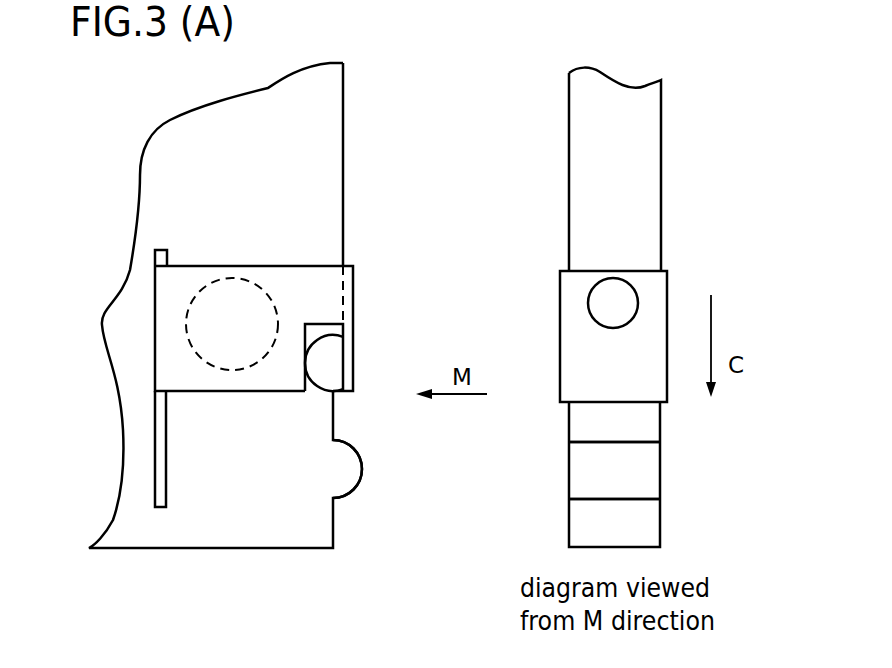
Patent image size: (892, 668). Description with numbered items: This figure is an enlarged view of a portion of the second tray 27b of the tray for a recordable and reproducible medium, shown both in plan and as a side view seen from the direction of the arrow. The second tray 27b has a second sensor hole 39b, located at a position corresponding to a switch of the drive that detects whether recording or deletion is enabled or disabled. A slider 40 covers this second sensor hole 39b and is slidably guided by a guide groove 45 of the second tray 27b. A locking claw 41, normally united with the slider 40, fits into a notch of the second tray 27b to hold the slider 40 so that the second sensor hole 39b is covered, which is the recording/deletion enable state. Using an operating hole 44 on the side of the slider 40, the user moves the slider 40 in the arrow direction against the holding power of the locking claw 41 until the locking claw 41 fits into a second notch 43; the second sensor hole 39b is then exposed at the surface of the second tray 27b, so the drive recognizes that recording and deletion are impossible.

The second tray 27b is at (157, 192).
The second sensor hole 39b is at (212, 323).
The slider 40 is at (280, 283).
The locking claw 41 is at (332, 367).
The second notch 43 is at (307, 470).
The operating hole 44 is at (620, 295).
The guide groove 45 is at (158, 452).